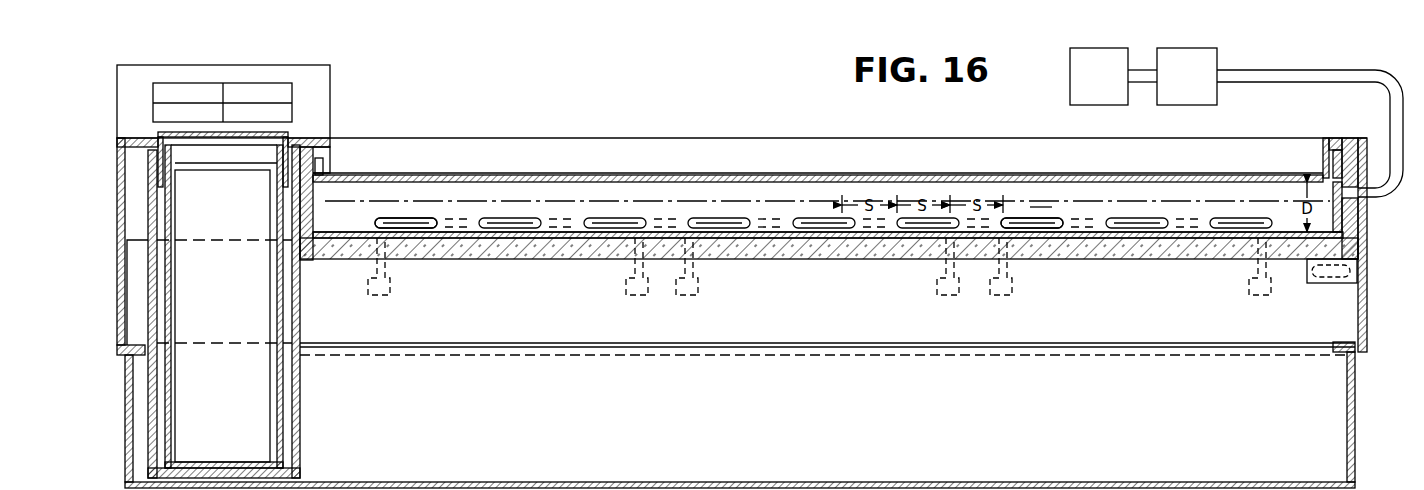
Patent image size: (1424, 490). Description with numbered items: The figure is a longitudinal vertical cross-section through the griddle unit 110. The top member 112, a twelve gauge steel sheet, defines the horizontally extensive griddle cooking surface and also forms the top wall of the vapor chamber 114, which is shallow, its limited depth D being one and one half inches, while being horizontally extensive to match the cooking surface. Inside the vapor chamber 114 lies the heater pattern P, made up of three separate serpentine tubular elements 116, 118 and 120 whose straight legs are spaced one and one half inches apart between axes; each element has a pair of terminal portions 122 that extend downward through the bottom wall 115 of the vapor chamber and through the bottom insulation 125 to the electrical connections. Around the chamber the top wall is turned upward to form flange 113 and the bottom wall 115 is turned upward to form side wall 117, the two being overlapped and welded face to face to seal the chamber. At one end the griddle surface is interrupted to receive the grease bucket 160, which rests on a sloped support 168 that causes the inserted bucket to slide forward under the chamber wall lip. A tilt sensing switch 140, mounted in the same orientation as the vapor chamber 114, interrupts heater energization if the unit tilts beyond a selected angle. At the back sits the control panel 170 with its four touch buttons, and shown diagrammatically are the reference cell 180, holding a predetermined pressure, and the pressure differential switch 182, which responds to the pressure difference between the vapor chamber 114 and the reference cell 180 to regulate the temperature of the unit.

The griddle unit 110 is at (783, 87).
The top member 112 is at (1002, 175).
The flange 113 is at (1337, 153).
The vapor chamber 114 is at (1040, 198).
The bottom wall 115 is at (1152, 238).
The tubular element 116 is at (417, 228).
The side wall 117 is at (1345, 220).
The tubular element 118 is at (722, 224).
The tubular element 120 is at (1027, 224).
The terminal portions 122 is at (372, 265).
The bottom insulation 125 is at (1112, 256).
The tilt sensing switch 140 is at (1323, 285).
The grease bucket 160 is at (268, 424).
The sloped support 168 is at (158, 445).
The control panel 170 is at (330, 70).
The reference cell 180 is at (1070, 62).
The pressure differential switch 182 is at (1217, 58).